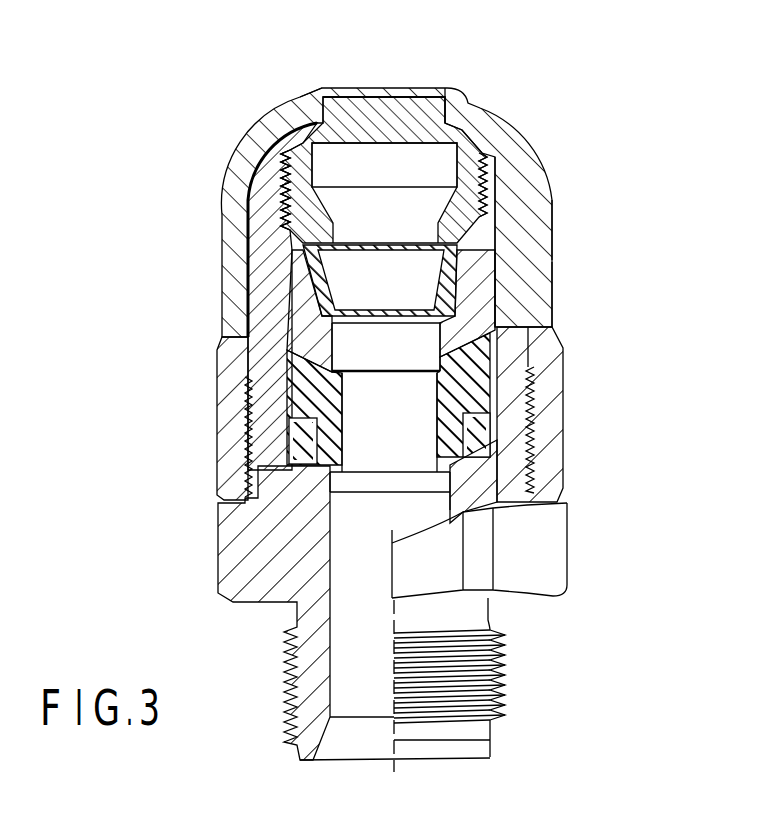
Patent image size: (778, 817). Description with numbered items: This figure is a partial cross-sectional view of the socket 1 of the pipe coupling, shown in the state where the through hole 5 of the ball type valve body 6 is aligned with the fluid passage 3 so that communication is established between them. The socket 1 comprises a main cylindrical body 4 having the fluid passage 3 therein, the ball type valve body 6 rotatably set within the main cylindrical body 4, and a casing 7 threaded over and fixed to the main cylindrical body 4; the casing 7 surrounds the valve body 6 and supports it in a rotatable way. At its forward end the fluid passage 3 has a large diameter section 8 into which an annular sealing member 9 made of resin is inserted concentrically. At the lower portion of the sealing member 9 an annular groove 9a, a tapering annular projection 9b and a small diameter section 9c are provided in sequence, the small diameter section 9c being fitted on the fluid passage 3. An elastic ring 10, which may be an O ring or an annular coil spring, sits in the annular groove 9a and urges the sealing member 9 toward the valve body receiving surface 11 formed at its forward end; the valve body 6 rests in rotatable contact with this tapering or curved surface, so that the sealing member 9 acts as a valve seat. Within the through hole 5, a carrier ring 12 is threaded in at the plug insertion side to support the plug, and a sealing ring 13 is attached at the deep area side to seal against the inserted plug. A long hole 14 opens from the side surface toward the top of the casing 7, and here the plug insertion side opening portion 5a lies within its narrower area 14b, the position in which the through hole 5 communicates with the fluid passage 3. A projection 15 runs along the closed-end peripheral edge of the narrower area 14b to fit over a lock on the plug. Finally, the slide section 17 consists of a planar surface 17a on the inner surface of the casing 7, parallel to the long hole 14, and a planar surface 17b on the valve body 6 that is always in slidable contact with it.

The socket 1 is at (195, 416).
The fluid passage 3 is at (380, 453).
The main cylindrical body 4 is at (258, 565).
The through hole 5 is at (363, 187).
The plug insertion side opening portion 5a is at (348, 150).
The ball type valve body 6 is at (258, 215).
The casing 7 is at (232, 290).
The large diameter section 8 is at (272, 410).
The annular sealing member 9 is at (292, 392).
The annular groove 9a is at (467, 427).
The tapering annular projection 9b is at (490, 447).
The small diameter section 9c is at (530, 473).
The elastic ring 10 is at (302, 440).
The valve body receiving surface 11 is at (300, 330).
The carrier ring 12 is at (300, 168).
The sealing ring 13 is at (312, 290).
The long hole 14 is at (395, 97).
The narrower area 14b is at (426, 100).
The projection 15 is at (313, 100).
The slide section 17 is at (622, 210).
The planar surface 17a is at (477, 292).
The planar surface 17b is at (497, 223).